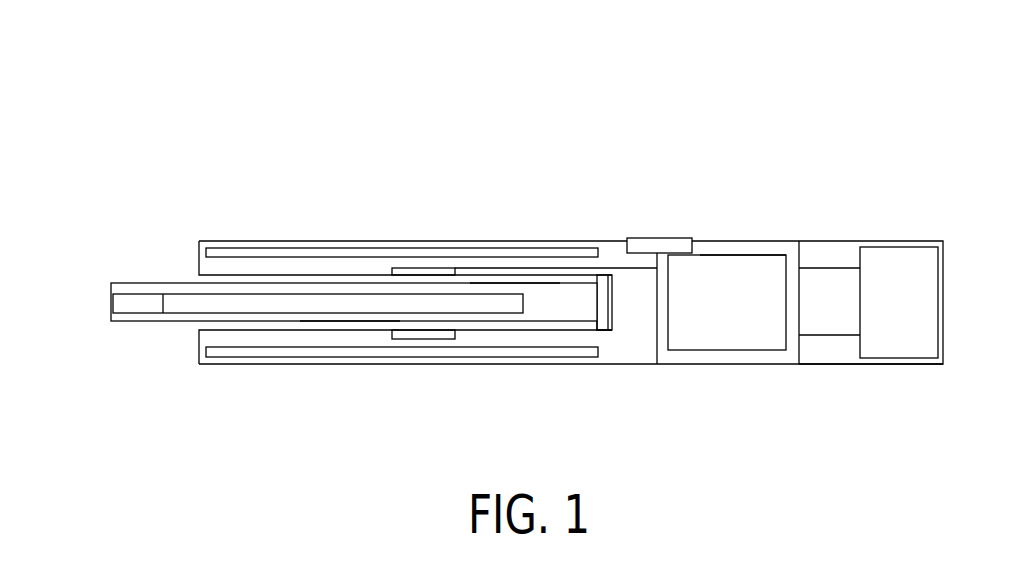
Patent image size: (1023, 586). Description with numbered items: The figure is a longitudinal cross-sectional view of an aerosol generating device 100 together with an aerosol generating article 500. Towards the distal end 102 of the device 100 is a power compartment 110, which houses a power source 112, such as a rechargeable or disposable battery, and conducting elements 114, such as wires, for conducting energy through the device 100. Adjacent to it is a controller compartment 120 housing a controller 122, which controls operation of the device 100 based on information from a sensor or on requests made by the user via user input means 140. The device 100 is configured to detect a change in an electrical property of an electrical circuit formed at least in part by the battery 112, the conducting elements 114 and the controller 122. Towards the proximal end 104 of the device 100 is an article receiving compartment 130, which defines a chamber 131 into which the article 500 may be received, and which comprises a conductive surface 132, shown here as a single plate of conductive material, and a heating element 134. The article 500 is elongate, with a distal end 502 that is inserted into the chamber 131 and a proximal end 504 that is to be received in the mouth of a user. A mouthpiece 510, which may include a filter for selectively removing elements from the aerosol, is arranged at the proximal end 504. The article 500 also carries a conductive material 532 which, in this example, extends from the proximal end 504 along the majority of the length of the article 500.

The aerosol generating device 100 is at (876, 72).
The distal end 102 is at (943, 297).
The proximal end 104 is at (199, 253).
The power compartment 110 is at (893, 365).
The power source 112 is at (903, 247).
The conducting elements 114 is at (841, 268).
The controller compartment 120 is at (735, 365).
The controller 122 is at (740, 255).
The article receiving compartment 130 is at (426, 365).
The chamber 131 is at (604, 322).
The conductive surface 132 is at (432, 268).
The heating element 134 is at (257, 241).
The user input means 140 is at (663, 238).
The article 500 is at (113, 223).
The distal end 502 is at (598, 290).
The proximal end 504 is at (111, 301).
The mouthpiece 510 is at (121, 322).
The conductive material 532 is at (517, 283).